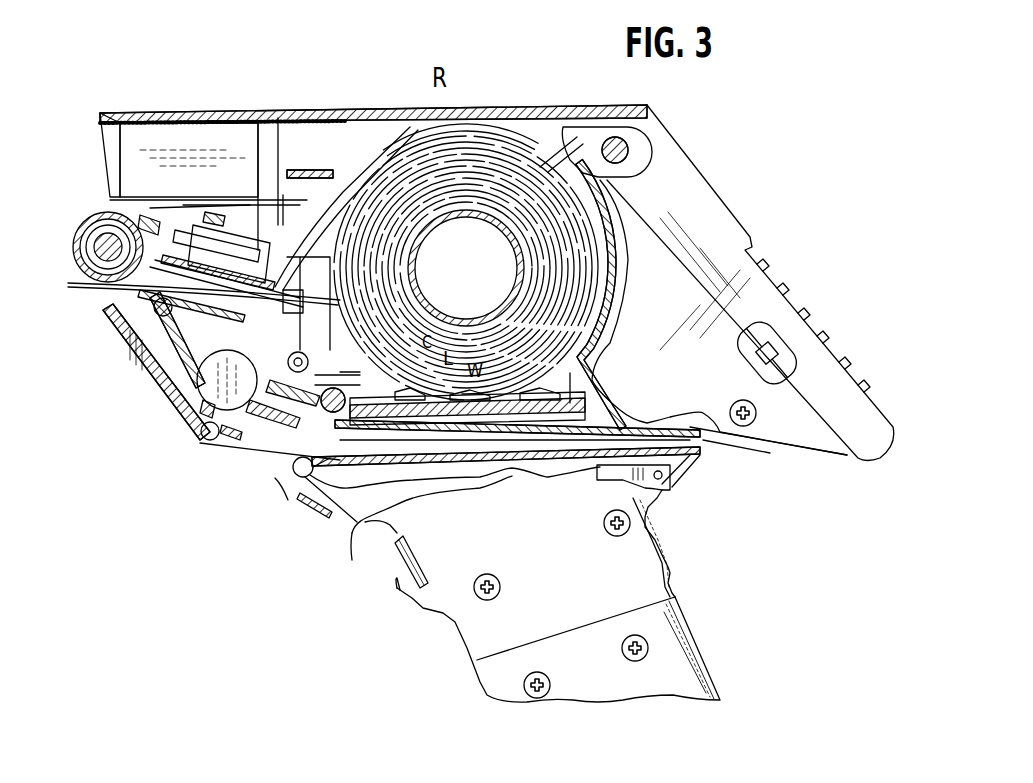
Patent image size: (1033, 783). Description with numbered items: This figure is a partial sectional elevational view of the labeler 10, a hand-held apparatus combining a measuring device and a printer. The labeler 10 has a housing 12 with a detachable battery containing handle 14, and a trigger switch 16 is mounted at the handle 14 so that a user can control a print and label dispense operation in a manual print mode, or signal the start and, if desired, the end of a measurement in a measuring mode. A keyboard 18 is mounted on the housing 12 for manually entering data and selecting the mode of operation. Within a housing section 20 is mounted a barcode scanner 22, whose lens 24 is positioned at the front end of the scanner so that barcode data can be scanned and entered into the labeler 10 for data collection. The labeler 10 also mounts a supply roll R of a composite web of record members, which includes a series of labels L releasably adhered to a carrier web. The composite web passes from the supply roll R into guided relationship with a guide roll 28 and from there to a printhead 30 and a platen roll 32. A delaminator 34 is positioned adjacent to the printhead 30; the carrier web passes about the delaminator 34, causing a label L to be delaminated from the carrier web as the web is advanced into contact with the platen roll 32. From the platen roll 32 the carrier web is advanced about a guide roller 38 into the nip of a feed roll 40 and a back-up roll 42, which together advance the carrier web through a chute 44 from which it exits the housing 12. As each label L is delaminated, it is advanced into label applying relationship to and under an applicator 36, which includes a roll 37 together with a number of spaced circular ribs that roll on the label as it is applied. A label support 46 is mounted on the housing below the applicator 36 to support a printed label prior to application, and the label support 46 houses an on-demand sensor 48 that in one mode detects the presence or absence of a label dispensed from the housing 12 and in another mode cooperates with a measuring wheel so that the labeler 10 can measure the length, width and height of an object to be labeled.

The labeler 10 is at (722, 510).
The housing 12 is at (767, 418).
The detachable battery containing handle 14 is at (687, 662).
The trigger switch 16 is at (397, 592).
The keyboard 18 is at (808, 316).
The housing section 20 is at (346, 112).
The barcode scanner 22 is at (190, 128).
The lens 24 is at (103, 133).
The guide roll 28 is at (295, 438).
The printhead 30 is at (233, 285).
The platen roll 32 is at (187, 375).
The delaminator 34 is at (127, 297).
The applicator 36 is at (88, 220).
The roll 37 is at (74, 238).
The guide roller 38 is at (197, 447).
The feed roll 40 is at (298, 472).
The back-up roll 42 is at (275, 478).
The chute 44 is at (365, 522).
The label support 46 is at (107, 317).
The on-demand sensor 48 is at (128, 343).
The supply roll R is at (466, 262).
The label L is at (377, 353).